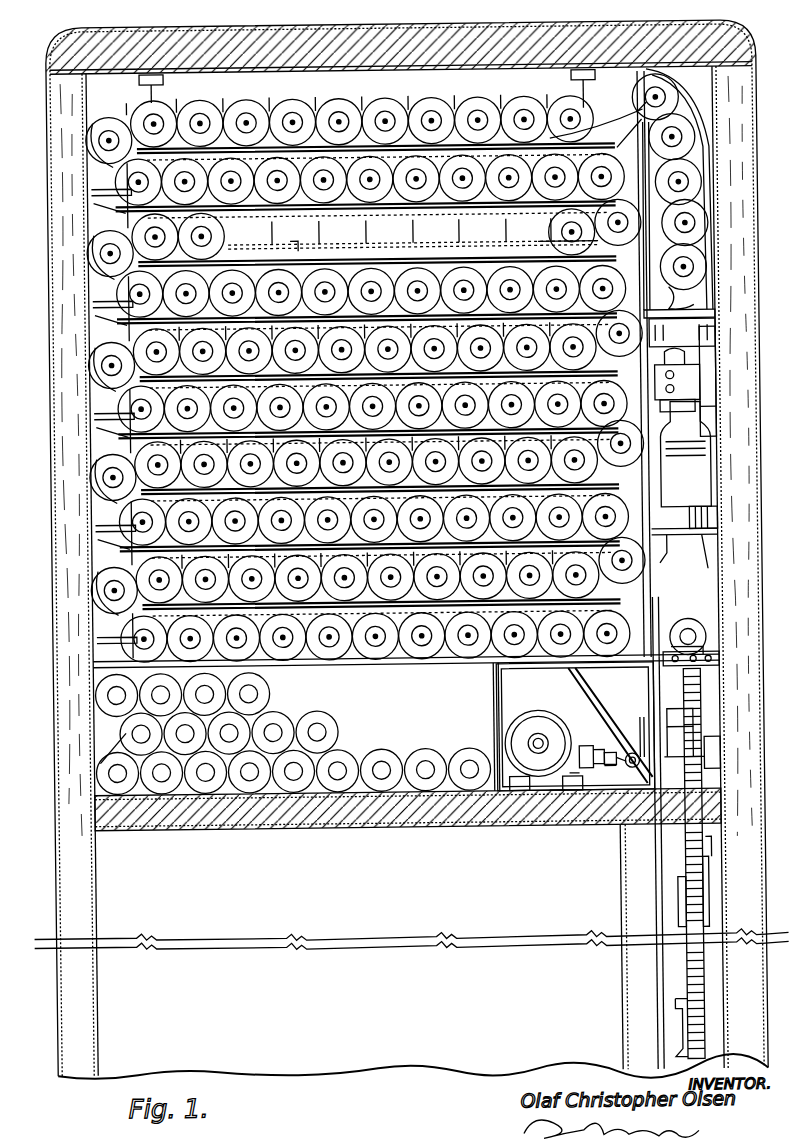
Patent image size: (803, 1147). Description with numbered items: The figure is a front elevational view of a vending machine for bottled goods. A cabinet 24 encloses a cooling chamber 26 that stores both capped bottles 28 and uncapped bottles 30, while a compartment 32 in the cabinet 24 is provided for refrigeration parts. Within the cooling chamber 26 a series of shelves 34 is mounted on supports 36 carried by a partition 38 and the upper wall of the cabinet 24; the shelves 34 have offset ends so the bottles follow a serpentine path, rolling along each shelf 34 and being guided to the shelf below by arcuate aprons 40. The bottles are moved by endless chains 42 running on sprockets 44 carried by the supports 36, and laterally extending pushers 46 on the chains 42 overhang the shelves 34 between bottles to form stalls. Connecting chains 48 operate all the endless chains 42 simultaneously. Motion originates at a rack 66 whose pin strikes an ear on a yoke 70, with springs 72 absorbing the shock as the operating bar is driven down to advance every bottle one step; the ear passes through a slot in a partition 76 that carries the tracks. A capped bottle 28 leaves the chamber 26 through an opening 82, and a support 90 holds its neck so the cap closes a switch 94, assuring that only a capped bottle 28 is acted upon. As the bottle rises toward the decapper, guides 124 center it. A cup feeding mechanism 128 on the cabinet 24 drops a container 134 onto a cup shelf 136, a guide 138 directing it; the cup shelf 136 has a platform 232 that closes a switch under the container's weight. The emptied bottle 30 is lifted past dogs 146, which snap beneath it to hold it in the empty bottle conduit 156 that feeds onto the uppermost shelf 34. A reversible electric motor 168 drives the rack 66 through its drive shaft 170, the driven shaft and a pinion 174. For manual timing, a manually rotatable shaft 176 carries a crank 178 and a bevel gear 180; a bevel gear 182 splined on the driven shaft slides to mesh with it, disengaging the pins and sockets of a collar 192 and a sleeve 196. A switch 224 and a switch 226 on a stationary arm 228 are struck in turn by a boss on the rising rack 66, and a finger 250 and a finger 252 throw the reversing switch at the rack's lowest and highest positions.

The cabinet 24 is at (779, 99).
The cooling chamber 26 is at (362, 110).
The capped bottle 28 is at (228, 238).
The uncapped bottle 30 is at (524, 108).
The compartment 32 is at (294, 851).
The shelf 34 is at (340, 250).
The support 36 is at (158, 93).
The partition 38 is at (445, 664).
The arcuate apron 40 is at (96, 286).
The endless chain 42 is at (548, 248).
The sprocket 44 is at (612, 132).
The pusher 46 is at (310, 236).
The connecting chain 48 is at (95, 446).
The rack 66 is at (698, 975).
The yoke 70 is at (638, 722).
The spring 72 is at (616, 705).
The partition 76 is at (700, 258).
The opening 82 is at (640, 622).
The support 90 is at (705, 618).
The switch 94 is at (700, 658).
The guide 124 is at (668, 556).
The cup feeding mechanism 128 is at (700, 380).
The container 134 is at (695, 420).
The cup shelf 136 is at (716, 536).
The guide 138 is at (708, 450).
The dog 146 is at (700, 292).
The empty bottle conduit 156 is at (690, 115).
The electric motor 168 is at (522, 725).
The drive shaft 170 is at (548, 790).
The pinion 174 is at (700, 752).
The manually rotatable shaft 176 is at (618, 768).
The crank 178 is at (572, 778).
The bevel gear 180 is at (630, 772).
The bevel gear 182 is at (606, 770).
The collar 192 is at (604, 755).
The sleeve 196 is at (580, 748).
The switch 224 is at (672, 904).
The switch 226 is at (700, 851).
The arm 228 is at (704, 906).
The platform 232 is at (700, 520).
The finger 250 is at (662, 750).
The finger 252 is at (695, 1034).